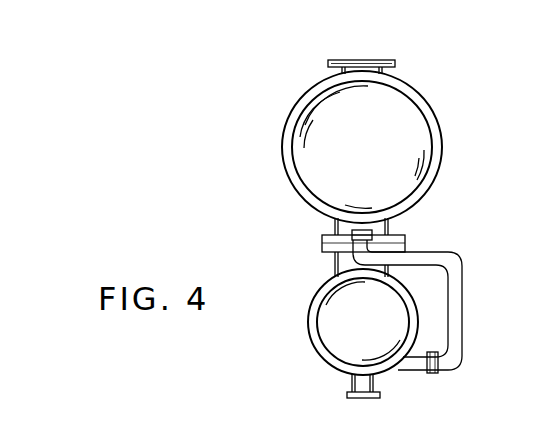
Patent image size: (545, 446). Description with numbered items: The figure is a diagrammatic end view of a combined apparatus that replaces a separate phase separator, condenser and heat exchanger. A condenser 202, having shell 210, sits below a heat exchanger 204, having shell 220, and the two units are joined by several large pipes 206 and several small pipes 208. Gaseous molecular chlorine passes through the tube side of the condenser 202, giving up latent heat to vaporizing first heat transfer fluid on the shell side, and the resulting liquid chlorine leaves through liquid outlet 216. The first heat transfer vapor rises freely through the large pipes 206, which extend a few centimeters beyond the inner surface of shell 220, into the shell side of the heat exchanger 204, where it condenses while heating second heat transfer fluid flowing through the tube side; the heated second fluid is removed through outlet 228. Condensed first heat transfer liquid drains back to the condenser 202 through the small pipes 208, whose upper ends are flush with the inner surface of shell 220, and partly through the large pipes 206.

The condenser 202 is at (317, 333).
The heat exchanger 204 is at (303, 113).
The large pipes 206 is at (335, 228).
The small pipes 208 is at (462, 300).
The shell 210 is at (333, 360).
The liquid outlet 216 is at (380, 397).
The shell 220 is at (420, 113).
The outlet 228 is at (370, 62).